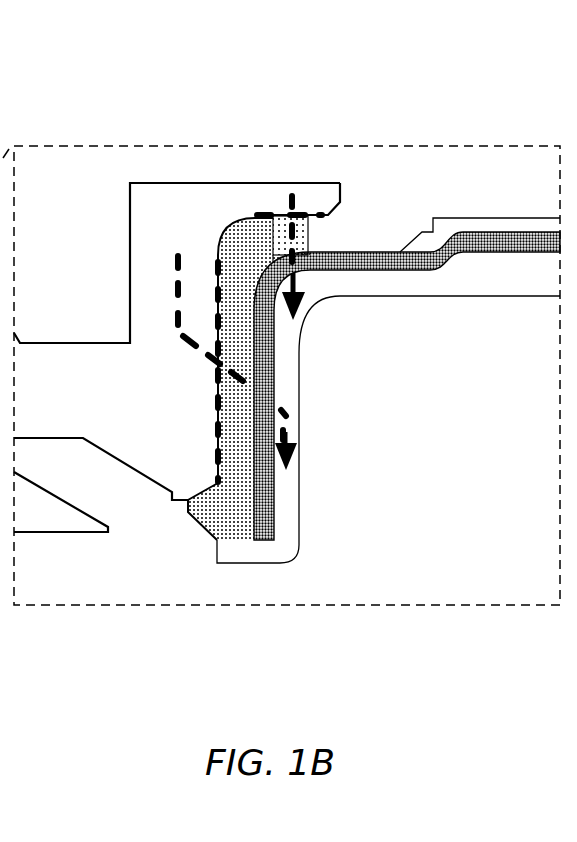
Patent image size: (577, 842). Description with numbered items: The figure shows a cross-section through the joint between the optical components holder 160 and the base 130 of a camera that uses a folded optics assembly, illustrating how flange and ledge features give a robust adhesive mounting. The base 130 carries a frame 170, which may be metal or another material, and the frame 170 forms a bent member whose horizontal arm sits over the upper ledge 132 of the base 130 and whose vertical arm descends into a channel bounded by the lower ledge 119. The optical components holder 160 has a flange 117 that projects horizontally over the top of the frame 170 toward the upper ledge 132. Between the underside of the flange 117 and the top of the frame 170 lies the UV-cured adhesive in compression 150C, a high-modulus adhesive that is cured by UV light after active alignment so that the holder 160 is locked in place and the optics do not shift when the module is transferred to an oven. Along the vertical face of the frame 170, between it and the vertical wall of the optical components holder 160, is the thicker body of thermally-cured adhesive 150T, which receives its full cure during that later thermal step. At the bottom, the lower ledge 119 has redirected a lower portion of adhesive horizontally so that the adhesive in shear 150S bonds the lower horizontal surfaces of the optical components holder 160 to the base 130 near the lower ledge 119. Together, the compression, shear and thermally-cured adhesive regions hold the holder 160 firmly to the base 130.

The thermally-cured adhesive 150T is at (241, 221).
The UV-cured adhesive in compression 150C is at (287, 222).
The adhesive in shear 150S is at (192, 515).
The flange 117 is at (315, 196).
The base 130 is at (538, 289).
The upper ledge 132 is at (307, 270).
The optical components holder 160 is at (172, 426).
The frame 170 is at (272, 500).
The lower ledge 119 is at (265, 553).